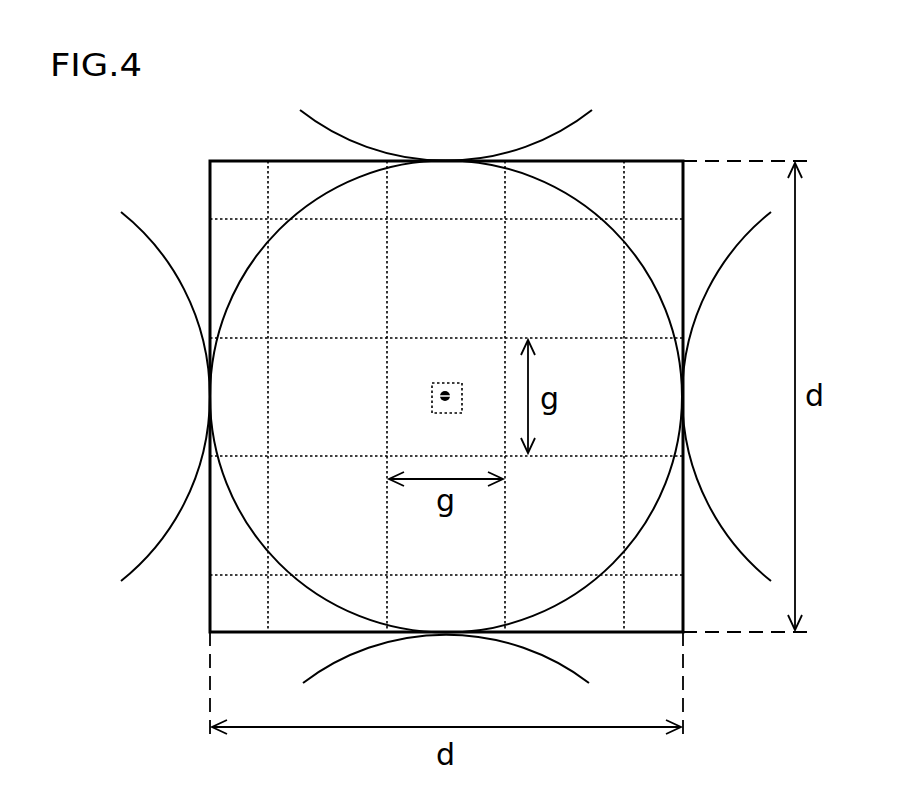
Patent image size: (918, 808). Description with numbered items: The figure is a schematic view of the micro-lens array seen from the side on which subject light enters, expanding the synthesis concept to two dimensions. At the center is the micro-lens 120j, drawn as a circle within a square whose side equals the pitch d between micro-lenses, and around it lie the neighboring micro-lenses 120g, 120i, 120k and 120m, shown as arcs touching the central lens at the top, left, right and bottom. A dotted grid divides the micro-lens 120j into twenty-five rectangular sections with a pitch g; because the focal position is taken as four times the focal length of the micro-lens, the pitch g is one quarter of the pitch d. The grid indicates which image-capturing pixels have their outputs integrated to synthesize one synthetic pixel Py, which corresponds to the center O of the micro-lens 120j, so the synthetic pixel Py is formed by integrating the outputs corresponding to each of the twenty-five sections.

The micro-lens 120g is at (545, 123).
The micro-lens 120i is at (135, 240).
The micro-lens 120j is at (648, 297).
The micro-lens 120k is at (738, 533).
The micro-lens 120m is at (540, 665).
The center of the micro-lens O is at (447, 393).
The synthetic pixel Py is at (432, 408).